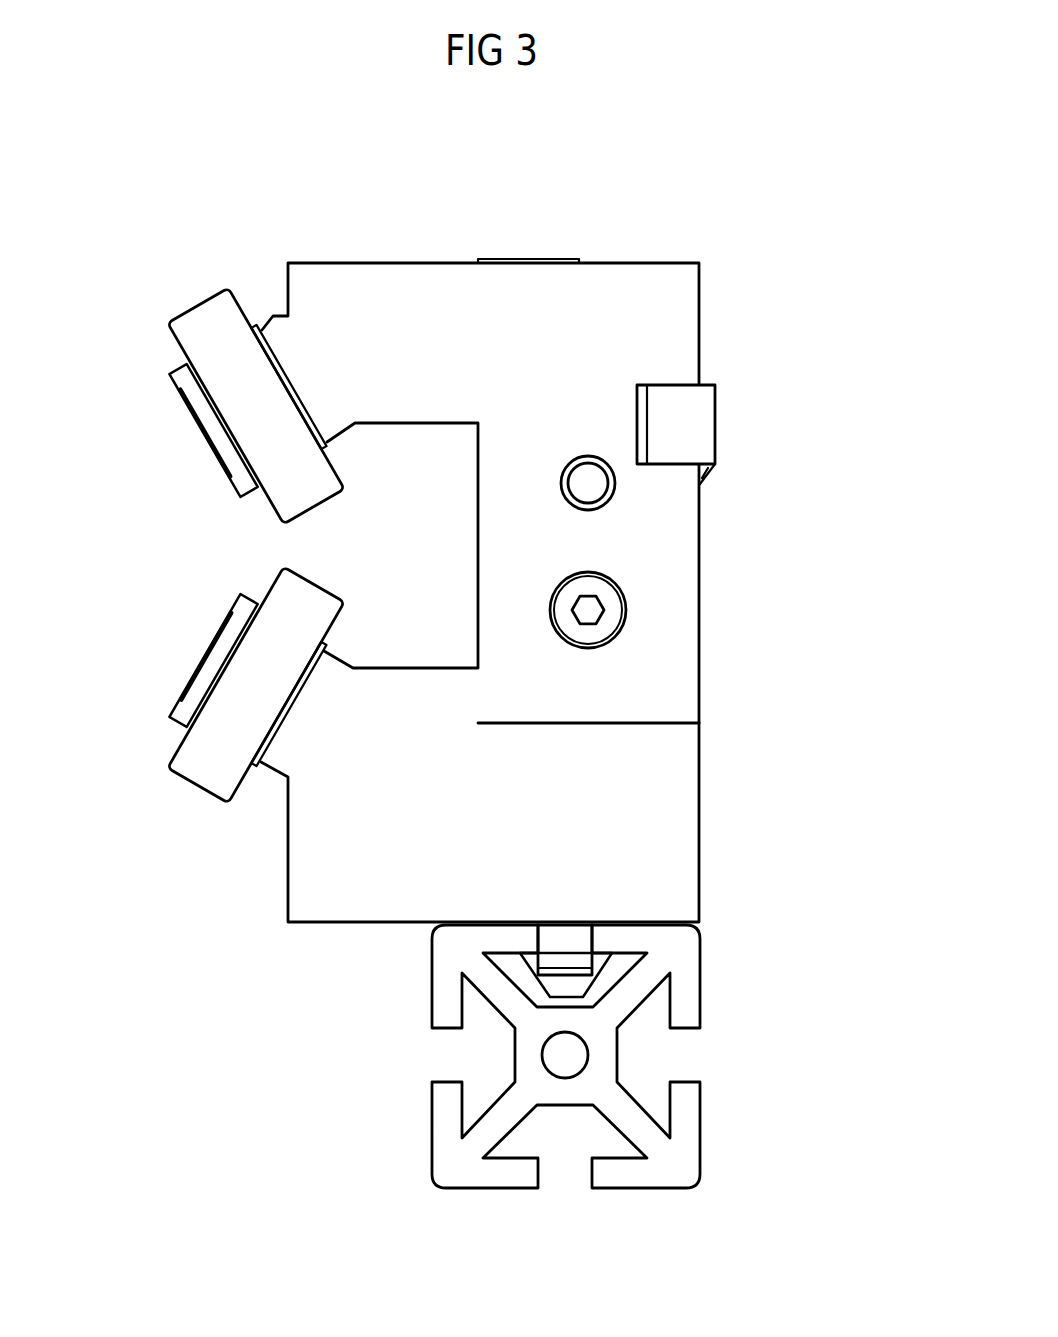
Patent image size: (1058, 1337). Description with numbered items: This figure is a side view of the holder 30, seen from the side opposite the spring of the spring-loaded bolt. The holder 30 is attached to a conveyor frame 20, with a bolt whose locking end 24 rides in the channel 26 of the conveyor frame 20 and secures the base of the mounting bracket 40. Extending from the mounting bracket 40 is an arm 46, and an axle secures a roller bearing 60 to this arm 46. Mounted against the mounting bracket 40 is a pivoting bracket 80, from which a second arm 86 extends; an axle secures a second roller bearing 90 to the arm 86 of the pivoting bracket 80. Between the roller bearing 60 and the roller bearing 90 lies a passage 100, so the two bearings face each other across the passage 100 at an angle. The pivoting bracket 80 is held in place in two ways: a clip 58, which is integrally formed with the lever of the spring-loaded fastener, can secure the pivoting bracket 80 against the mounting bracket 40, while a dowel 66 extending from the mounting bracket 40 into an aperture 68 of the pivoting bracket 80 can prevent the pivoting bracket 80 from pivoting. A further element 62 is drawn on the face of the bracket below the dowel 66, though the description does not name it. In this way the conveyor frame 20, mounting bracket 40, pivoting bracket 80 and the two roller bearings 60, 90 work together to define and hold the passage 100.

The conveyor frame 20 is at (433, 1127).
The locking end 24 is at (527, 1002).
The channel 26 is at (517, 968).
The holder 30 is at (692, 217).
The mounting bracket 40 is at (700, 812).
The arm 46 is at (275, 773).
The clip 58 is at (715, 410).
The roller bearing 60 is at (197, 787).
The socket head screw 62 is at (610, 622).
The dowel 66 is at (588, 483).
The aperture 68 is at (613, 492).
The pivoting bracket 80 is at (700, 328).
The arm 86 is at (273, 318).
The roller bearing 90 is at (197, 305).
The passage 100 is at (280, 546).